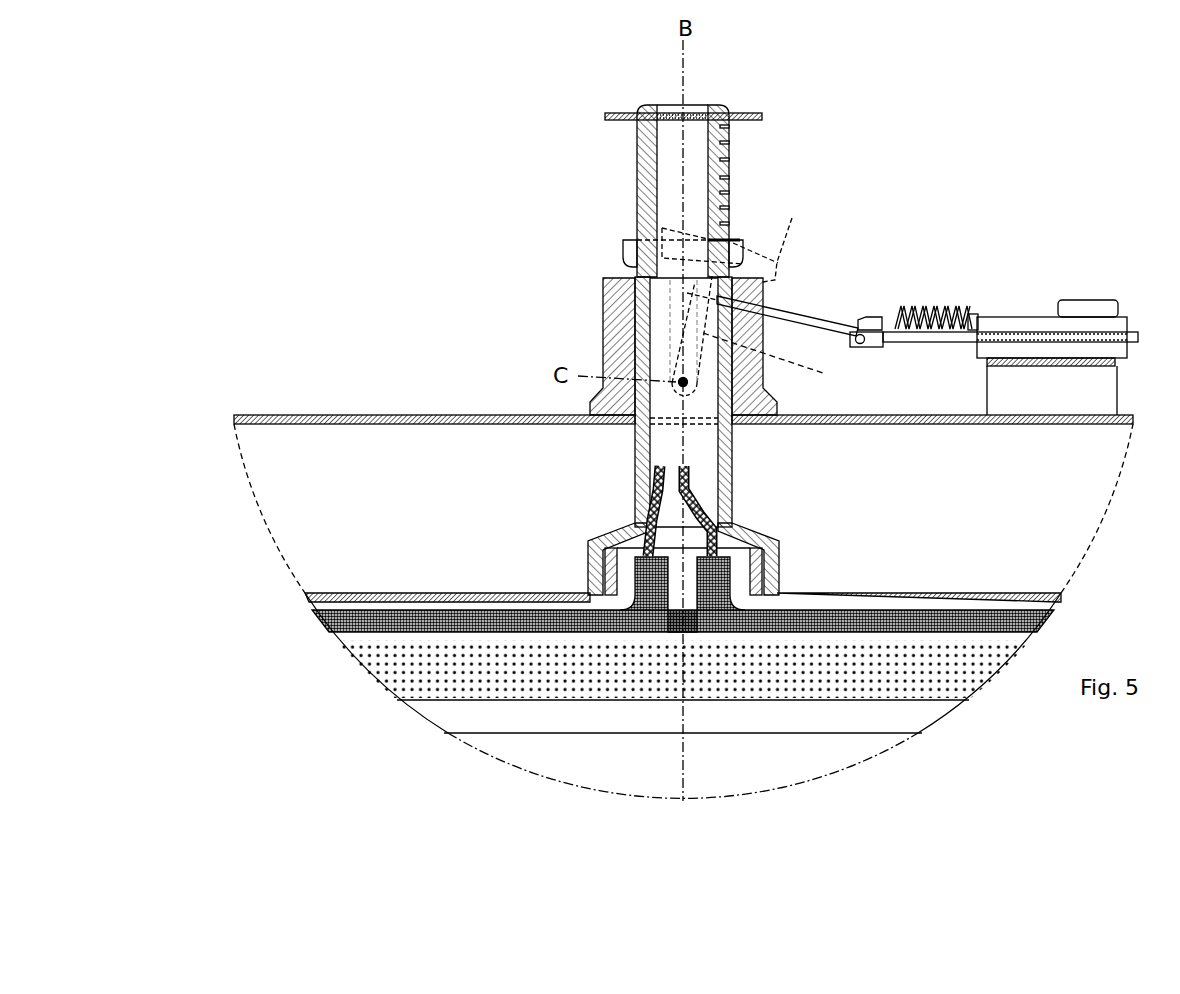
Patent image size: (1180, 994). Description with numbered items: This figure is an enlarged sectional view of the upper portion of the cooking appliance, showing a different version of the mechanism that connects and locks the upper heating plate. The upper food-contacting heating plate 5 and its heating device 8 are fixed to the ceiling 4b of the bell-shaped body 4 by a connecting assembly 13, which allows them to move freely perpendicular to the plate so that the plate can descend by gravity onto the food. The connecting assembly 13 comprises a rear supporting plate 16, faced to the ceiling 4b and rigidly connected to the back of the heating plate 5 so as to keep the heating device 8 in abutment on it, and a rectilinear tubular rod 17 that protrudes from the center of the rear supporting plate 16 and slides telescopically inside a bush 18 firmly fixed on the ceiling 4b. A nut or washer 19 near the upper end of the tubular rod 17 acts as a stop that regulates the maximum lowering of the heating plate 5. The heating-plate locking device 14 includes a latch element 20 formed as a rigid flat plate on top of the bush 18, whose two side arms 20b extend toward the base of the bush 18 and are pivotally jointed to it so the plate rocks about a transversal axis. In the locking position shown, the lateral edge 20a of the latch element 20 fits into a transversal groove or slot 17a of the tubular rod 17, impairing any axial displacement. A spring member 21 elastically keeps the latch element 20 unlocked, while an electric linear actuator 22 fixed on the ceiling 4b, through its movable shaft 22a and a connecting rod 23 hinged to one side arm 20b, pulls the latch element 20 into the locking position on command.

The bell-shaped body 4 is at (278, 428).
The ceiling 4b is at (330, 416).
The upper food-contacting heating plate 5 is at (537, 677).
The heating device 8 is at (437, 622).
The connecting assembly 13 is at (560, 493).
The heating-plate locking device 14 is at (998, 305).
The rear supporting plate 16 is at (380, 600).
The tubular rod 17 is at (636, 140).
The transversal groove or slot 17a is at (729, 196).
The bush 18 is at (605, 331).
The nut or washer 19 is at (628, 112).
The latch element 20 is at (626, 250).
The lateral edge 20a is at (713, 242).
The side arms 20b is at (785, 363).
The spring member 21 is at (928, 303).
The electric linear actuator 22 is at (1028, 323).
The movable shaft 22a is at (930, 345).
The connecting rod 23 is at (793, 316).